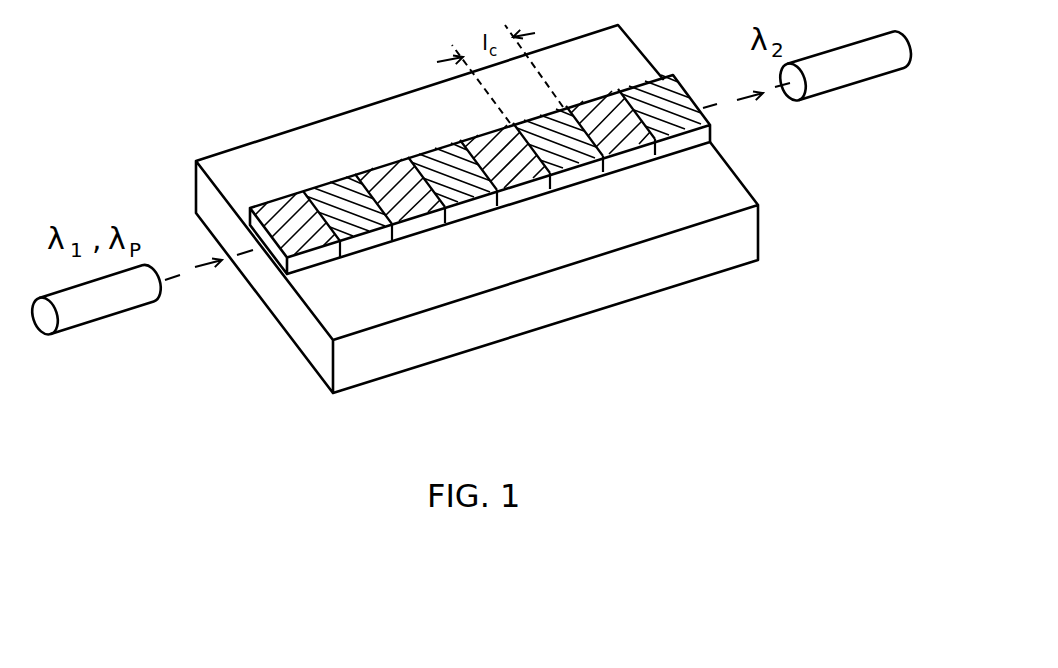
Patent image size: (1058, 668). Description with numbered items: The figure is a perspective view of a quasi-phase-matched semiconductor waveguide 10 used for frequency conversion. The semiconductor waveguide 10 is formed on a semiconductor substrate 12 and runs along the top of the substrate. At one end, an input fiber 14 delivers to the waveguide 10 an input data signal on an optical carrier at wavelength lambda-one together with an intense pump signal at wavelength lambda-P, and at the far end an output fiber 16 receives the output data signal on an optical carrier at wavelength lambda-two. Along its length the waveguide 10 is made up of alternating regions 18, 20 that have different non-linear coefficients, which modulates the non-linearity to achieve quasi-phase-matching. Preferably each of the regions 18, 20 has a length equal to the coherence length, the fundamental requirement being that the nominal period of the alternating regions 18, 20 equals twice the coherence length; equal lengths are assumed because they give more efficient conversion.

The semiconductor waveguide 10 is at (448, 221).
The semiconductor substrate 12 is at (310, 343).
The input fiber 14 is at (98, 307).
The output fiber 16 is at (842, 72).
The alternating region 18 is at (282, 203).
The alternating region 20 is at (335, 185).